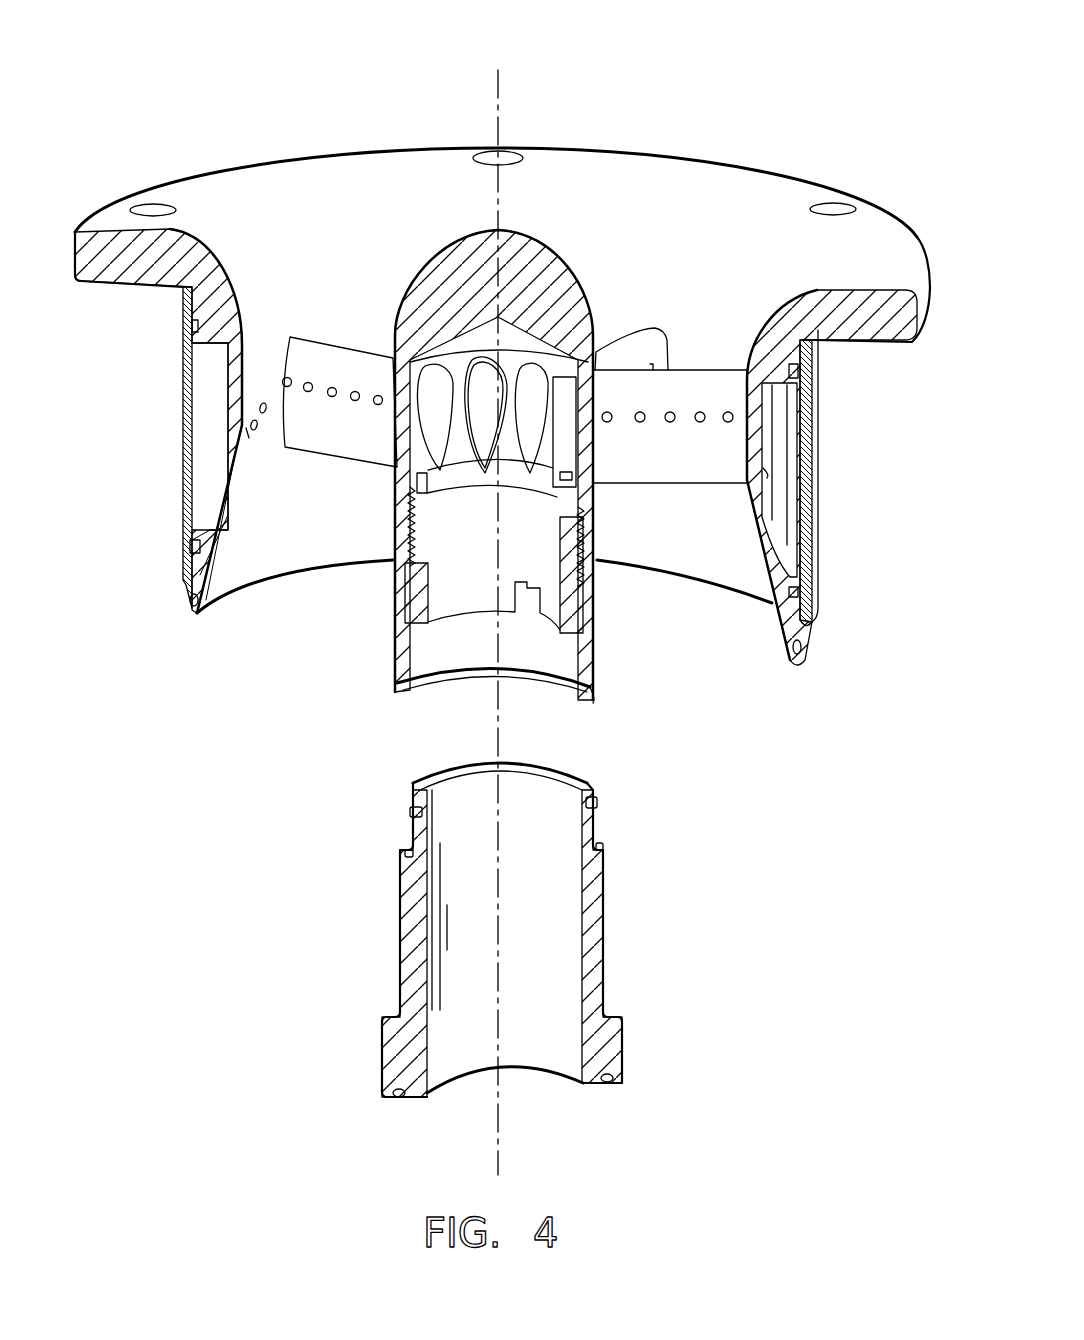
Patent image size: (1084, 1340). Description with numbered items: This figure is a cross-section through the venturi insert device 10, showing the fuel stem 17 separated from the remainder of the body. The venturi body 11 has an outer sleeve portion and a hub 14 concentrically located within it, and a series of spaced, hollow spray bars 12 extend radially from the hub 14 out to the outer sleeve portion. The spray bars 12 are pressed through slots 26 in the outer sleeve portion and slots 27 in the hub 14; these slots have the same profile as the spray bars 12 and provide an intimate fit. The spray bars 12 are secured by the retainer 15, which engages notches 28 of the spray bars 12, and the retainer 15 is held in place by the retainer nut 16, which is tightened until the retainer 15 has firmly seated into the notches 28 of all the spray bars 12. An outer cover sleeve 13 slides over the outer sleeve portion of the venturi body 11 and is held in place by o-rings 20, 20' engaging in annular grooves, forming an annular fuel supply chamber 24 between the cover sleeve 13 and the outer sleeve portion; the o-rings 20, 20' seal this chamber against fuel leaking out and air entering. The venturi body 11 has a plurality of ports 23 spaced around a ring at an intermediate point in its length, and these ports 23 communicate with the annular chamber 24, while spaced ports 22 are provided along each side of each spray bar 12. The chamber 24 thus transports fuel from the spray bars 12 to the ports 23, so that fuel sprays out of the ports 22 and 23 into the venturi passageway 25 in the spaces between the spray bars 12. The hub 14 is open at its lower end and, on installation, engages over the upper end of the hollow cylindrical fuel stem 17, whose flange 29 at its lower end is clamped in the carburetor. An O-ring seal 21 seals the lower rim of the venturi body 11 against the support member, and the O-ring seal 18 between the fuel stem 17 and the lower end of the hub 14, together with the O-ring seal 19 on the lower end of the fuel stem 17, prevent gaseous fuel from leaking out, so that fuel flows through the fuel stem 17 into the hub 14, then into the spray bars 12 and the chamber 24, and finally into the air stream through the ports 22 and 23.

The venturi insert device 10 is at (645, 60).
The venturi body 11 is at (722, 160).
The spray bars 12 is at (313, 357).
The outer cover sleeve 13 is at (822, 370).
The hub 14 is at (450, 250).
The retainer 15 is at (579, 493).
The retainer nut 16 is at (575, 608).
The fuel stem 17 is at (603, 920).
The O-ring seal 18 is at (593, 800).
The O-ring seal 19 is at (613, 1085).
The o-ring 20 is at (156, 447).
The o-ring 20' is at (156, 522).
The O-ring seal 21 is at (192, 597).
The ports 22 is at (305, 392).
The ports 23 is at (256, 432).
The annular fuel supply chamber 24 is at (793, 420).
The venturi passageway 25 is at (707, 360).
The slots 26 is at (278, 352).
The slots 27 is at (453, 472).
The notches 28 is at (547, 478).
The flange 29 is at (613, 1027).